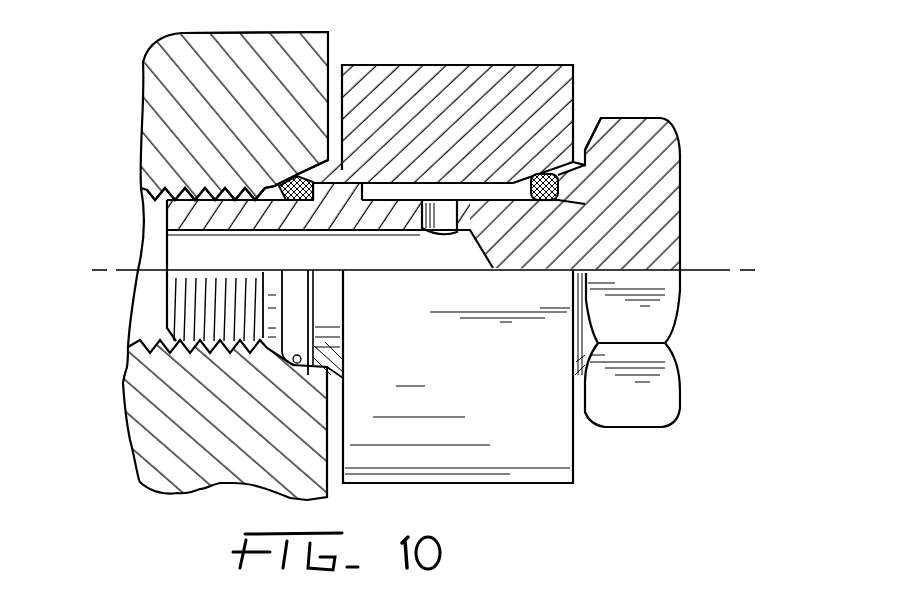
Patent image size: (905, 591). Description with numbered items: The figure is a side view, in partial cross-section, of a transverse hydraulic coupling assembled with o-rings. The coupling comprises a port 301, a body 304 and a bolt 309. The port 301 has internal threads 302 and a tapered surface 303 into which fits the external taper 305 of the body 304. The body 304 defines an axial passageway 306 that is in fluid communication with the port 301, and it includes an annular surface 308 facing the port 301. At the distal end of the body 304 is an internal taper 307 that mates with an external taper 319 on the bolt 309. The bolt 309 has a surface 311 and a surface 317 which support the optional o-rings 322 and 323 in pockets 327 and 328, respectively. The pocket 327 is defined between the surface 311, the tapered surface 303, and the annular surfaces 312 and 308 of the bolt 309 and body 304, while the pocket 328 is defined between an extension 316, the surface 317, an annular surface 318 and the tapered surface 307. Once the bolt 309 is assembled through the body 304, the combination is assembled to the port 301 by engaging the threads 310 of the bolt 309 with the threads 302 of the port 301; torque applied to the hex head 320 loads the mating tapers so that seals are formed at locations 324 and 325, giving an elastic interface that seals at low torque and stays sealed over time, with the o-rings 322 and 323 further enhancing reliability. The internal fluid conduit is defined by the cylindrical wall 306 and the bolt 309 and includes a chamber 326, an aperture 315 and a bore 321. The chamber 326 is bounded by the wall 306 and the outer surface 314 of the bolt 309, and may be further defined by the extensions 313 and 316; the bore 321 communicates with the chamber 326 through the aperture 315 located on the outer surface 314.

The port 301 is at (168, 60).
The internal threads 302 is at (162, 195).
The tapered surface 303 is at (307, 352).
The body 304 is at (499, 486).
The external taper 305 is at (328, 447).
The axial passageway 306 is at (418, 182).
The internal taper 307 is at (533, 182).
The annular surface 308 is at (293, 177).
The bolt 309 is at (681, 301).
The threads 310 is at (187, 185).
The surface 311 is at (262, 368).
The annular surface 312 is at (310, 186).
The extension 313 is at (330, 184).
The outer surface 314 is at (388, 202).
The aperture 315 is at (440, 225).
The extension 316 is at (503, 182).
The surface 317 is at (545, 205).
The annular surface 318 is at (558, 185).
The external taper 319 is at (585, 165).
The hex head 320 is at (663, 380).
The bore 321 is at (233, 235).
The o-ring 322 is at (288, 176).
The o-ring 323 is at (557, 200).
The seal location 324 is at (307, 170).
The seal location 325 is at (546, 178).
The chamber 326 is at (448, 182).
The pocket 327 is at (270, 178).
The pocket 328 is at (523, 202).